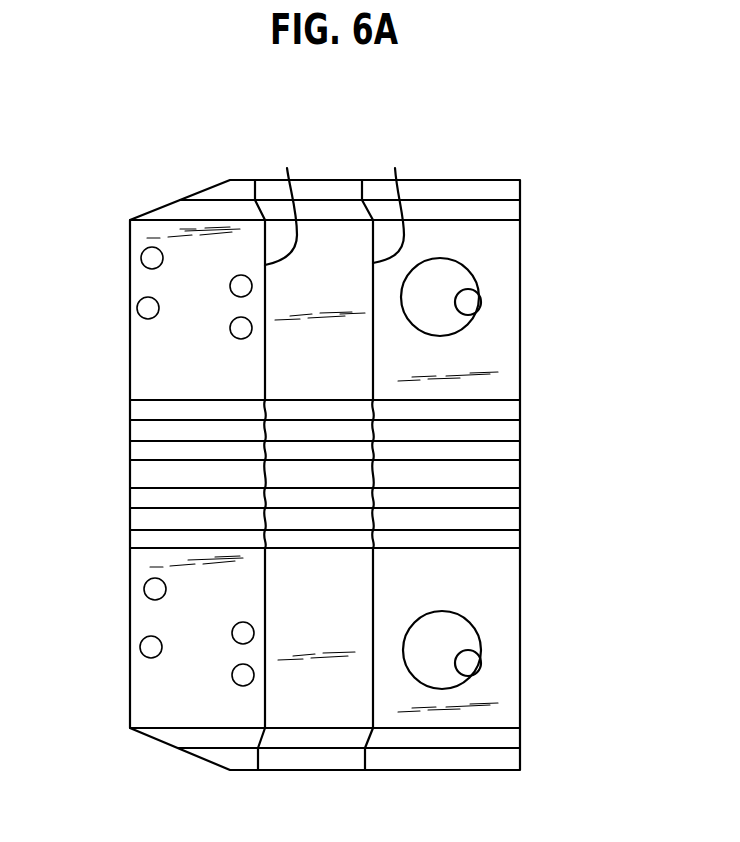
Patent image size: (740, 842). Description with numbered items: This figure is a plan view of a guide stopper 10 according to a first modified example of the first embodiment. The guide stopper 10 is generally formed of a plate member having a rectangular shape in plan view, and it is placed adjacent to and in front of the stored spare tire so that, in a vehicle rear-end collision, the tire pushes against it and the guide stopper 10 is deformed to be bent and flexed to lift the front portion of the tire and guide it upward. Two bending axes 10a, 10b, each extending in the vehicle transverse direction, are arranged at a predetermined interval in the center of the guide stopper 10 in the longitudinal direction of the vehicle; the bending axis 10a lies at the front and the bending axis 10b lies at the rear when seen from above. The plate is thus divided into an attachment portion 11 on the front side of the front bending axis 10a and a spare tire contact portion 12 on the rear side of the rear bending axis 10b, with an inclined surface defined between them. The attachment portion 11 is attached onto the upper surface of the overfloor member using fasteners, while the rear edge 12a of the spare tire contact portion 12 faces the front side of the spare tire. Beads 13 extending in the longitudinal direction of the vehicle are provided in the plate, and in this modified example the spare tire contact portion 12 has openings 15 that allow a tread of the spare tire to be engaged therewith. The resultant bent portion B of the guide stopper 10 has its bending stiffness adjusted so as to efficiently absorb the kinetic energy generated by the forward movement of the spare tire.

The guide stopper 10 is at (512, 146).
The bending axis 10a is at (287, 168).
The bending axis 10b is at (395, 168).
The attachment portion 11 is at (148, 363).
The spare tire contact portion 12 is at (487, 247).
The rear edge 12a is at (520, 472).
The bead 13 is at (354, 464).
The opening 15 is at (477, 315).
The bent portion B is at (270, 645).